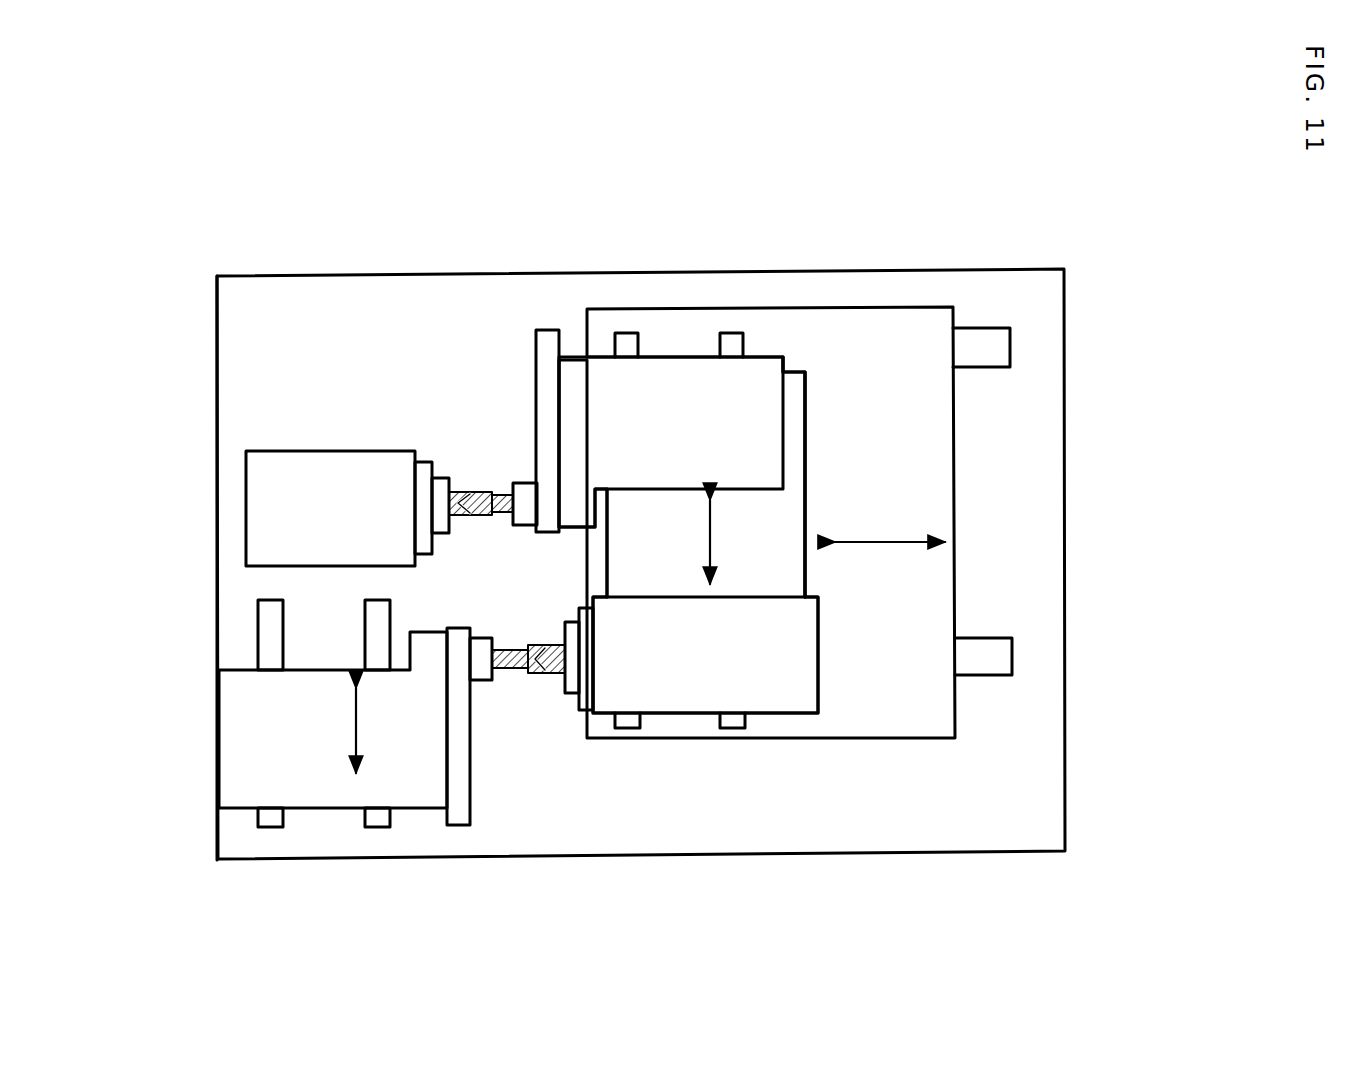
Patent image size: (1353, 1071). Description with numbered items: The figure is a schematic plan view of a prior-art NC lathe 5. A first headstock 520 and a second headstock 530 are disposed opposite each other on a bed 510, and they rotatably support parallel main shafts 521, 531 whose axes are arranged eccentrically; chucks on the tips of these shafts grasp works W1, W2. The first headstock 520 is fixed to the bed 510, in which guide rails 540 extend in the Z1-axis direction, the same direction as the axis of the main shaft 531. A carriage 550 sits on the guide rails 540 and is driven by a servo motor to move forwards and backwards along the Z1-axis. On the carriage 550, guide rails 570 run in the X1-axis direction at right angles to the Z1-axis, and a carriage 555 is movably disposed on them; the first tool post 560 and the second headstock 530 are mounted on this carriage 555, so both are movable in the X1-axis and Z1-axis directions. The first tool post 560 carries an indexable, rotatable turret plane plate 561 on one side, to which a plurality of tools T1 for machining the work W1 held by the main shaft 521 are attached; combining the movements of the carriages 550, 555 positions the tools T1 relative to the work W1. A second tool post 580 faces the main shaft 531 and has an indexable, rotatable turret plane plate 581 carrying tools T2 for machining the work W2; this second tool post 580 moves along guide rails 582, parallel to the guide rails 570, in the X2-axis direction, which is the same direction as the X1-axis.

The NC lathe 5 is at (886, 166).
The bed 510 is at (1020, 737).
The first headstock 520 is at (327, 448).
The main shaft 521 is at (456, 488).
The second headstock 530 is at (703, 718).
The main shaft 531 is at (565, 694).
The guide rails 540 is at (980, 328).
The carriage 550 is at (808, 745).
The carriage 555 is at (805, 405).
The first tool post 560 is at (760, 464).
The turret plane plate 561 is at (535, 330).
The guide rails 570 is at (628, 333).
The second tool post 580 is at (330, 812).
The turret plane plate 581 is at (473, 810).
The guide rails 582 is at (258, 600).
The tools T1 is at (501, 488).
The tools T2 is at (505, 676).
The work W1 is at (468, 517).
The work W2 is at (545, 646).